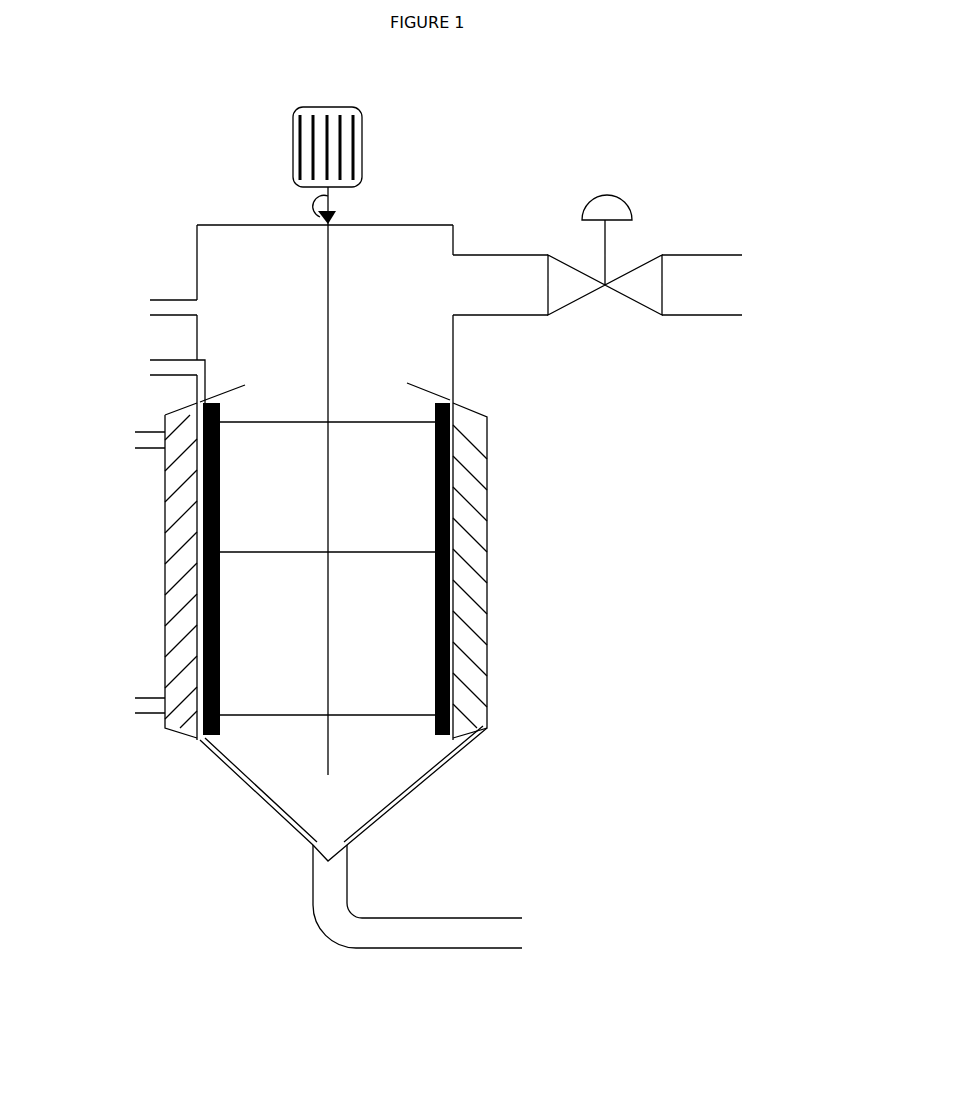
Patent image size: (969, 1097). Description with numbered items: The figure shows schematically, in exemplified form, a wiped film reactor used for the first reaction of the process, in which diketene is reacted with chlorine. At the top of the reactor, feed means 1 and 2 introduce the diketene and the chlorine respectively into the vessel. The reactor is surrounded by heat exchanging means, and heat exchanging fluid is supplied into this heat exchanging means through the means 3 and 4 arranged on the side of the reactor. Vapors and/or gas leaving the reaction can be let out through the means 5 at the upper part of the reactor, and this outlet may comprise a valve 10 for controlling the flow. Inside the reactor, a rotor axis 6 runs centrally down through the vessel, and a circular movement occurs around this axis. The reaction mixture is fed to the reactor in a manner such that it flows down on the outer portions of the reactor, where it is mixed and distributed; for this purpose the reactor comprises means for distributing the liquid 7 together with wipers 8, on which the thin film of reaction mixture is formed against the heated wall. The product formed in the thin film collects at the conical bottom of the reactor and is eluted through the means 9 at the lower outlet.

The means for feeding diketene 1 is at (149, 309).
The means for feeding chlorine 2 is at (149, 368).
The means for supplying heat exchanging fluid 3 is at (132, 442).
The means for supplying heat exchanging fluid 4 is at (132, 708).
The means for letting out vapors and/or gas 5 is at (747, 287).
The rotor axis 6 is at (330, 345).
The means for distributing the liquid 7 is at (410, 385).
The wipers 8 is at (453, 443).
The means for eluting the product 9 is at (518, 932).
The valve 10 is at (605, 243).